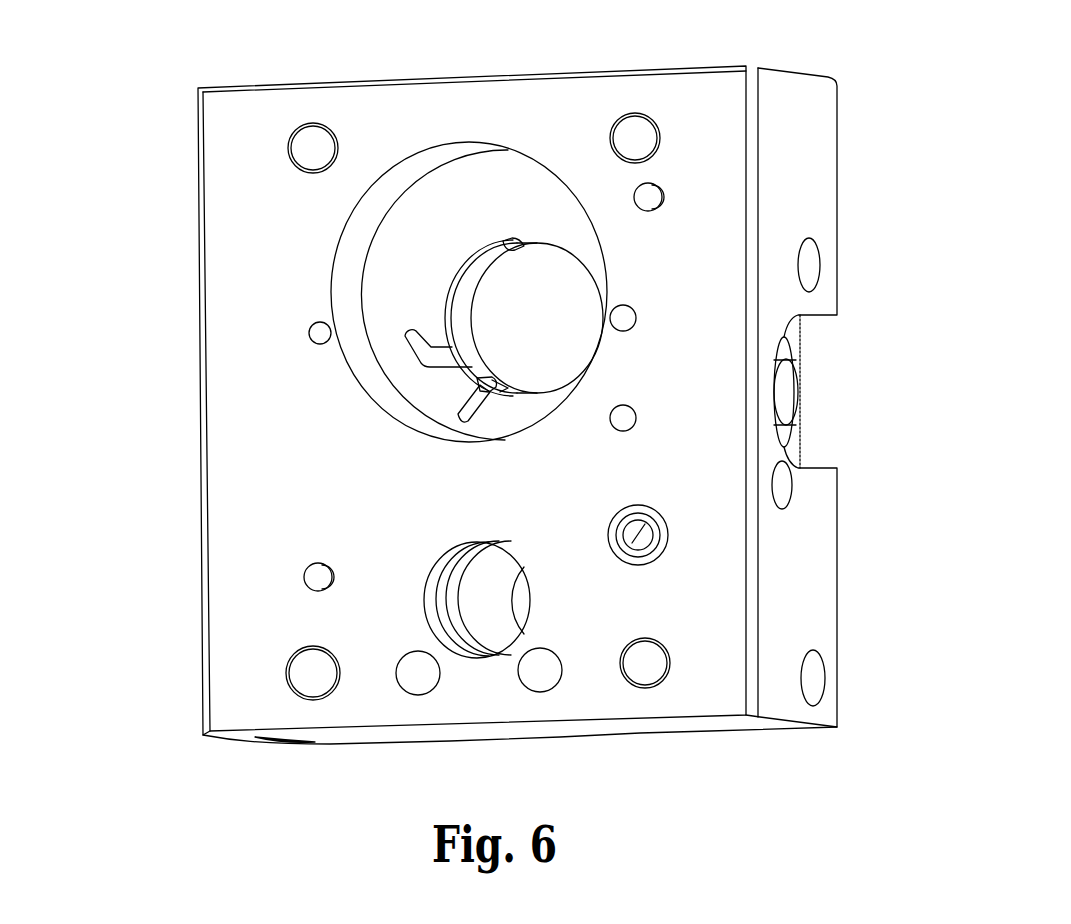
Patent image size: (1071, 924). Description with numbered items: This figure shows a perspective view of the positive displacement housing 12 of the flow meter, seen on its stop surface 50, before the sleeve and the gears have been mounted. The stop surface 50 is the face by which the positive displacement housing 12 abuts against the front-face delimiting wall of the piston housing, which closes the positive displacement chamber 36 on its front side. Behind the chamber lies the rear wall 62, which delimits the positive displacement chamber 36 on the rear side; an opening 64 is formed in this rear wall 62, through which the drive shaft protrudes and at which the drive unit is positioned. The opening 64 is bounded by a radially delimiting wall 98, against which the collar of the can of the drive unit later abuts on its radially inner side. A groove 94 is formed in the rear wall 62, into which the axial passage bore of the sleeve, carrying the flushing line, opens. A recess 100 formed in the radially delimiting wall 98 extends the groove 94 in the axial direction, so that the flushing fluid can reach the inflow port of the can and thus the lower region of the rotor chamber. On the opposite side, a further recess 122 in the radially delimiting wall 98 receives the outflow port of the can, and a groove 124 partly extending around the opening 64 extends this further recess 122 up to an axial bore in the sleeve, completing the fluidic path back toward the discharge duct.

The positive displacement housing 12 is at (795, 122).
The stop surface 50 is at (238, 175).
The positive displacement chamber 36 is at (428, 273).
The rear wall 62 is at (558, 217).
The opening 64 is at (565, 285).
The radially delimiting wall 98 is at (475, 300).
The recess 100 is at (487, 385).
The groove 94 is at (470, 410).
The further recess 122 is at (516, 243).
The groove 124 is at (483, 257).